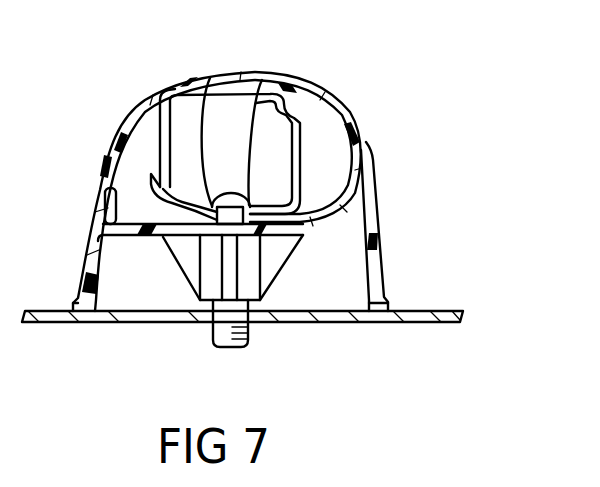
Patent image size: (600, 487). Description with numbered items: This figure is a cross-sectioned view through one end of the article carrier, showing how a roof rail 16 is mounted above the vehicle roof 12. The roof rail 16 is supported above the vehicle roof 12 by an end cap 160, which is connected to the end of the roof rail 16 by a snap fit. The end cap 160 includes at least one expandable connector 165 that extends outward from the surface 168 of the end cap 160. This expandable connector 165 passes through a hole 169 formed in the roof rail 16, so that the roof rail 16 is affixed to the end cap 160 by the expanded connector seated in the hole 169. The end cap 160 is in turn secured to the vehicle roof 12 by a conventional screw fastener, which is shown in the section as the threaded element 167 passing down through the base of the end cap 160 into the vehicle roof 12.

The vehicle roof 12 is at (427, 313).
The roof rail 16 is at (340, 120).
The end cap 160 is at (373, 215).
The expandable connector 165 is at (262, 80).
The mounting bolt 167 is at (250, 335).
The surface 168 is at (160, 234).
The hole 169 is at (210, 78).